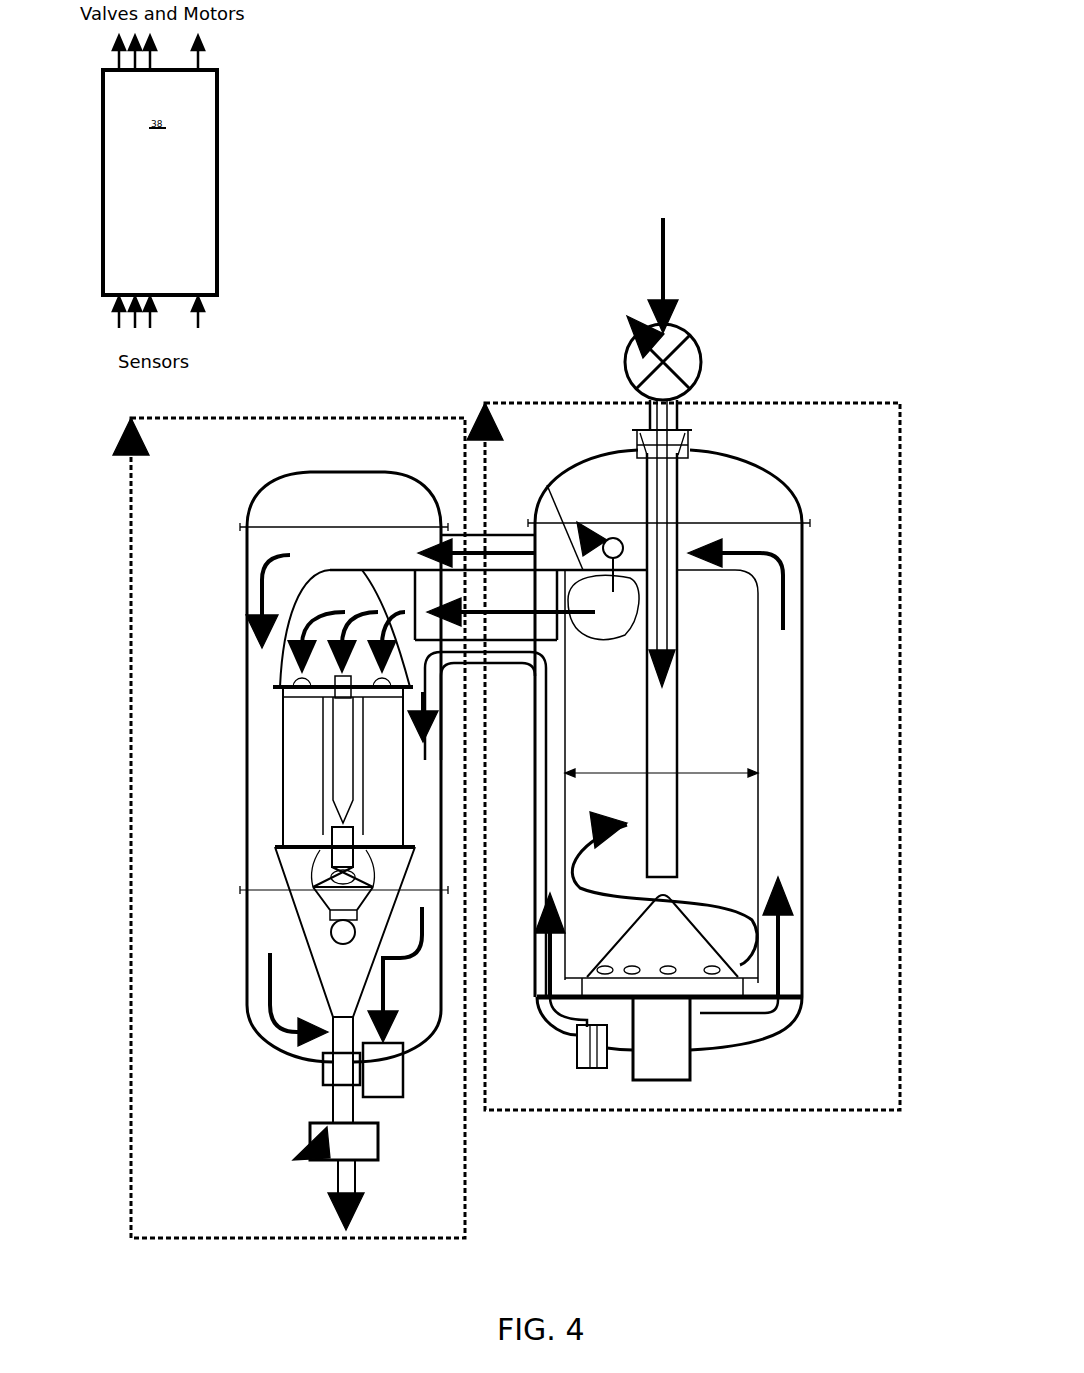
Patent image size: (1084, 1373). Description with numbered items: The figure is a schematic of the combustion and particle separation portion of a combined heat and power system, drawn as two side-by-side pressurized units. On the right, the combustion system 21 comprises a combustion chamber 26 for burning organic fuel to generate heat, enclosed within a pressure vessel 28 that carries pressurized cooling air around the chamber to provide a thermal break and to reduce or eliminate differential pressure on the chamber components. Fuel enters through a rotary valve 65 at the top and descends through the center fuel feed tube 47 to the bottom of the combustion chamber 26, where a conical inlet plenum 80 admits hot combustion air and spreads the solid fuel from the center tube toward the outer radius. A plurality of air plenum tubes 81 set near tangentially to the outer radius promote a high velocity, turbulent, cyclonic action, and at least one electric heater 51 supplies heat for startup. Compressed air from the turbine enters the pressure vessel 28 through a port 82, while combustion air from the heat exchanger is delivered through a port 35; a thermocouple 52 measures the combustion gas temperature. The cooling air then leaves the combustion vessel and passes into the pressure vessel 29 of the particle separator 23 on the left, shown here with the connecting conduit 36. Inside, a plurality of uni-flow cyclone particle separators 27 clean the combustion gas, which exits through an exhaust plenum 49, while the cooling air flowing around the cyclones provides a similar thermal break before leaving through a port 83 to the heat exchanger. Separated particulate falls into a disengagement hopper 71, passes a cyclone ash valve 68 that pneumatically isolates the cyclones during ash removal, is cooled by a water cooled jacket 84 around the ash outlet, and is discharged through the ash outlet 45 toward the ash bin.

The combustion system 21 is at (870, 575).
The particle separator 23 is at (150, 1075).
The combustion chamber 26 is at (737, 723).
The uni-flow cyclone particle separators 27 is at (300, 755).
The pressure vessel 28 is at (785, 783).
The pressure vessel 29 is at (260, 548).
The port 35 is at (678, 1065).
The conduit 36 is at (433, 628).
The outlet line 45 is at (322, 1178).
The fuel feed tube 47 is at (640, 432).
The exhaust plenum 49 is at (330, 942).
The electric heater 51 is at (538, 968).
The thermocouple 52 is at (575, 552).
The rotary valve 65 is at (705, 342).
The cyclone ash valve 68 is at (300, 1140).
The disengagement hopper 71 is at (335, 995).
The conical inlet plenum 80 is at (680, 920).
The air plenum tubes 81 is at (760, 963).
The port 82 is at (575, 1058).
The port 83 is at (398, 1082).
The water cooled jacket 84 is at (320, 1075).